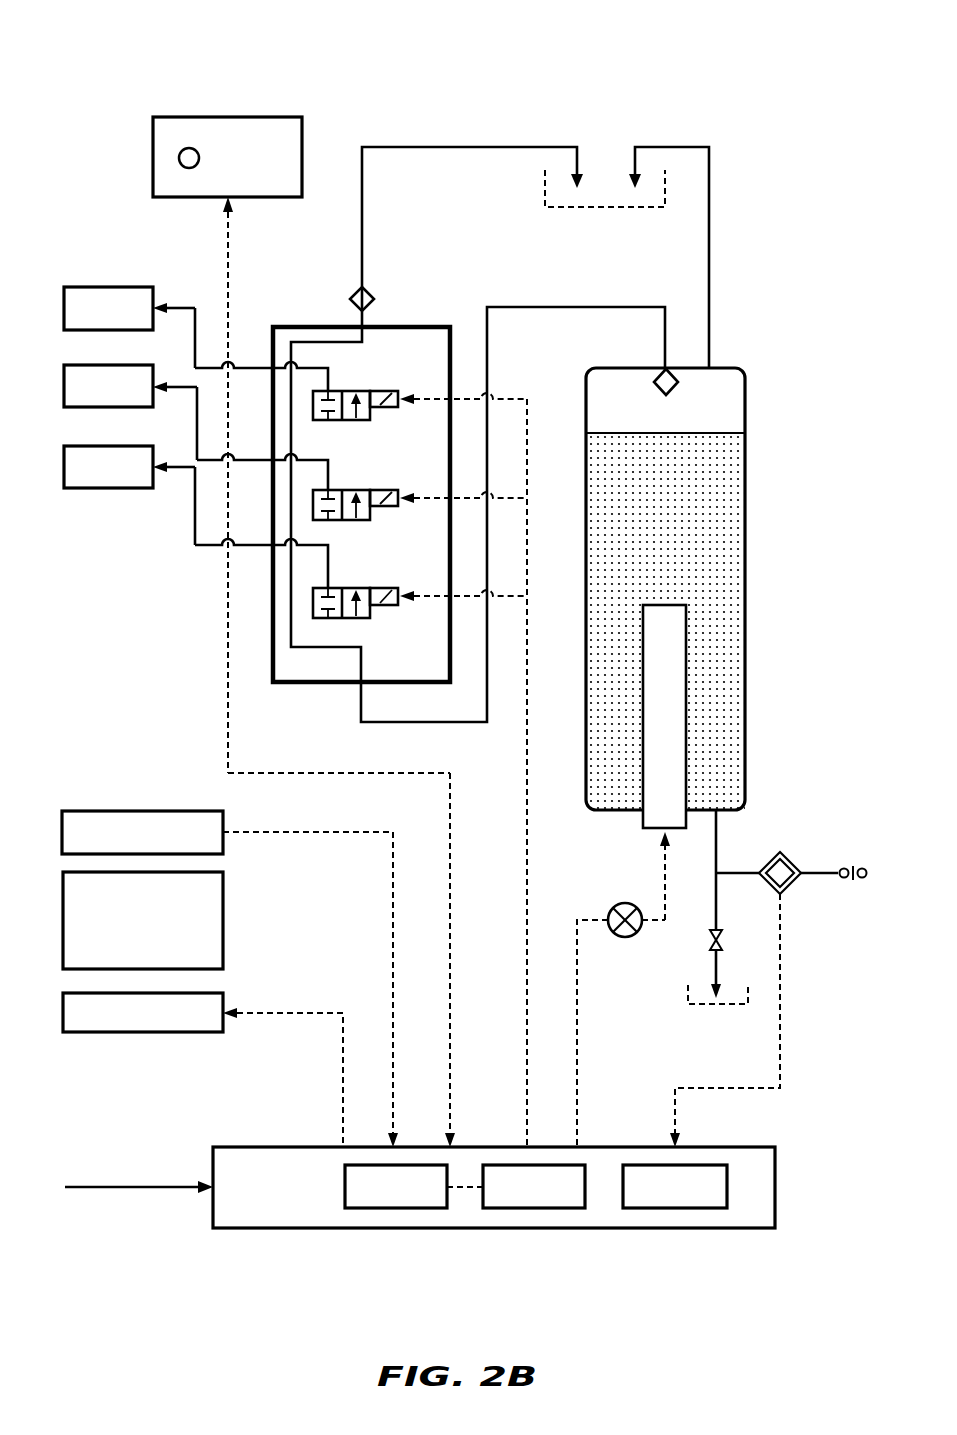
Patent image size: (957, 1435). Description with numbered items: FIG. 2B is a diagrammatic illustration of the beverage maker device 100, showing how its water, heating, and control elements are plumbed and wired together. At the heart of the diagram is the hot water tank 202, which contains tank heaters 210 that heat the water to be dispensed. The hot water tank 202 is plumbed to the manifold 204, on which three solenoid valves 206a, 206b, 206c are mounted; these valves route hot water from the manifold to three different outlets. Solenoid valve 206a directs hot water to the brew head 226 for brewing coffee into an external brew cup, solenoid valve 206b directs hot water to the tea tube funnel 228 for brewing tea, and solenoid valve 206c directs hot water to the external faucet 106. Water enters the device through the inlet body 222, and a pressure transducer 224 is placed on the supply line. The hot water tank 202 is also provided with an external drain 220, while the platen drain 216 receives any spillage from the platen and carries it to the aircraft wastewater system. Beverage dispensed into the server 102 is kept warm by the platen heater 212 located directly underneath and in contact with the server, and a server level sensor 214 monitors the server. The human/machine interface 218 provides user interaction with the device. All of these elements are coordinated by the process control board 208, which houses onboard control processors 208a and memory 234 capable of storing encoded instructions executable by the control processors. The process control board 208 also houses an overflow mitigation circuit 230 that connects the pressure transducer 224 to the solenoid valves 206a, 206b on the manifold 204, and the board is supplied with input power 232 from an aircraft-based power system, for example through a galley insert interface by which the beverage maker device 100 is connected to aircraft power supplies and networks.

The beverage maker device 100 is at (125, 68).
The human/machine interface 218 is at (227, 157).
The brew head 226 is at (108, 308).
The tea tube funnel 228 is at (108, 386).
The external faucet 106 is at (108, 467).
The manifold 204 is at (400, 327).
The solenoid valve 206a is at (350, 400).
The solenoid valve 206b is at (350, 505).
The solenoid valve 206c is at (345, 608).
The platen drain 216 is at (613, 207).
The hot water tank 202 is at (745, 410).
The tank heaters 210 is at (665, 740).
The pressure transducer 224 is at (780, 852).
The inlet body 222 is at (838, 896).
The external drain 220 is at (705, 1004).
The server level sensor 214 is at (142, 832).
The server 102 is at (143, 920).
The platen heater 212 is at (143, 1012).
The process control board 208 is at (494, 1187).
The control processors 208a is at (396, 1186).
The memory 234 is at (534, 1186).
The overflow mitigation circuit 230 is at (675, 1186).
The input power 232 is at (110, 1187).